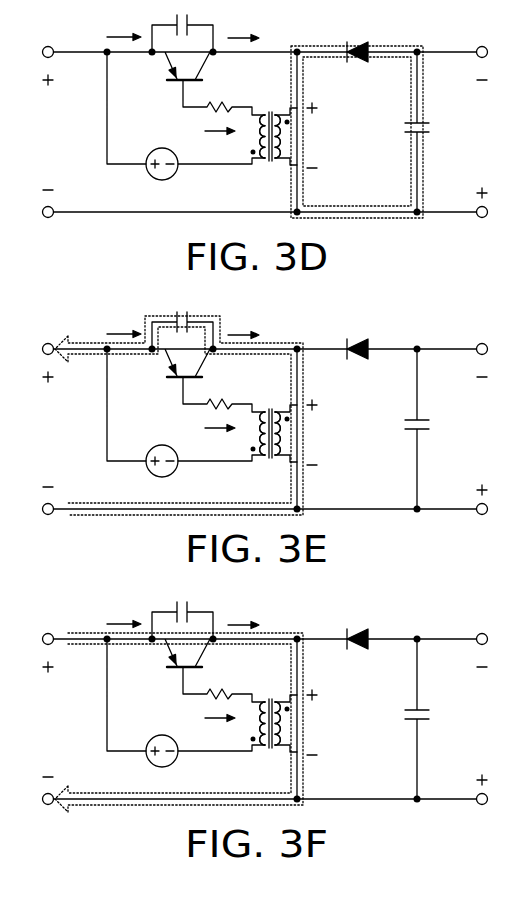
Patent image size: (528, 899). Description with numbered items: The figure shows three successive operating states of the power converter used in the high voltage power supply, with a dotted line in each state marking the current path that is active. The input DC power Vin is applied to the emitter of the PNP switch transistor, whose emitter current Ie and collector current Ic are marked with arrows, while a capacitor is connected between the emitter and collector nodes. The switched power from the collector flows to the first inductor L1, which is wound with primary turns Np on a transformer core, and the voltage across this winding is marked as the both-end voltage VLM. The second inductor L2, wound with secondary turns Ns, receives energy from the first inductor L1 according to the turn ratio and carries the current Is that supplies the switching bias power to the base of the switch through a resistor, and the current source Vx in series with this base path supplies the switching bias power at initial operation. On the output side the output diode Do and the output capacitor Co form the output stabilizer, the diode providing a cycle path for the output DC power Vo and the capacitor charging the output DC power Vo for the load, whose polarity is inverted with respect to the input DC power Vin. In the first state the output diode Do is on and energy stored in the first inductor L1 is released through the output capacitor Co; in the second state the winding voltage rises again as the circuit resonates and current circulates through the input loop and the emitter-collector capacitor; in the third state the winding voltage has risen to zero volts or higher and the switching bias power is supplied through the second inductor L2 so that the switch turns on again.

In FIG. 3D, the input DC power Vin is at (47, 132).
In FIG. 3E, the input DC power Vin is at (47, 429).
In FIG. 3F, the input DC power Vin is at (47, 719).
In FIG. 3D, the output DC power Vo is at (478, 132).
In FIG. 3E, the output DC power Vo is at (478, 429).
In FIG. 3F, the output DC power Vo is at (478, 719).
In FIG. 3D, the current source Vx is at (174, 179).
In FIG. 3E, the current source Vx is at (174, 476).
In FIG. 3F, the current source Vx is at (174, 766).
In FIG. 3D, the output diode Do is at (357, 39).
In FIG. 3E, the output diode Do is at (357, 336).
In FIG. 3F, the output diode Do is at (357, 626).
In FIG. 3D, the output capacitor Co is at (401, 132).
In FIG. 3E, the output capacitor Co is at (401, 429).
In FIG. 3F, the output capacitor Co is at (401, 719).
In FIG. 3D, the first inductor L1 is at (280, 106).
In FIG. 3E, the first inductor L1 is at (281, 412).
In FIG. 3F, the first inductor L1 is at (281, 702).
In FIG. 3D, the second inductor L2 is at (256, 106).
In FIG. 3E, the second inductor L2 is at (247, 411).
In FIG. 3F, the second inductor L2 is at (247, 701).
In FIG. 3D, the secondary turns Ns is at (246, 156).
In FIG. 3E, the secondary turns Ns is at (246, 453).
In FIG. 3F, the secondary turns Ns is at (246, 743).
In FIG. 3D, the primary turns Np is at (278, 156).
In FIG. 3E, the primary turns Np is at (278, 453).
In FIG. 3F, the primary turns Np is at (278, 743).
In FIG. 3D, the both-end voltage of the first inductor VLM is at (305, 135).
In FIG. 3E, the both-end voltage of the first inductor VLM is at (305, 432).
In FIG. 3F, the both-end voltage of the first inductor VLM is at (305, 722).
In FIG. 3D, the emitter current Ie is at (124, 29).
In FIG. 3E, the emitter current Ie is at (124, 326).
In FIG. 3F, the emitter current Ie is at (124, 616).
In FIG. 3D, the collector current Ic is at (243, 30).
In FIG. 3E, the collector current Ic is at (243, 327).
In FIG. 3F, the collector current Ic is at (243, 617).
In FIG. 3D, the second inductor current Is is at (220, 141).
In FIG. 3E, the second inductor current Is is at (220, 438).
In FIG. 3F, the second inductor current Is is at (220, 728).